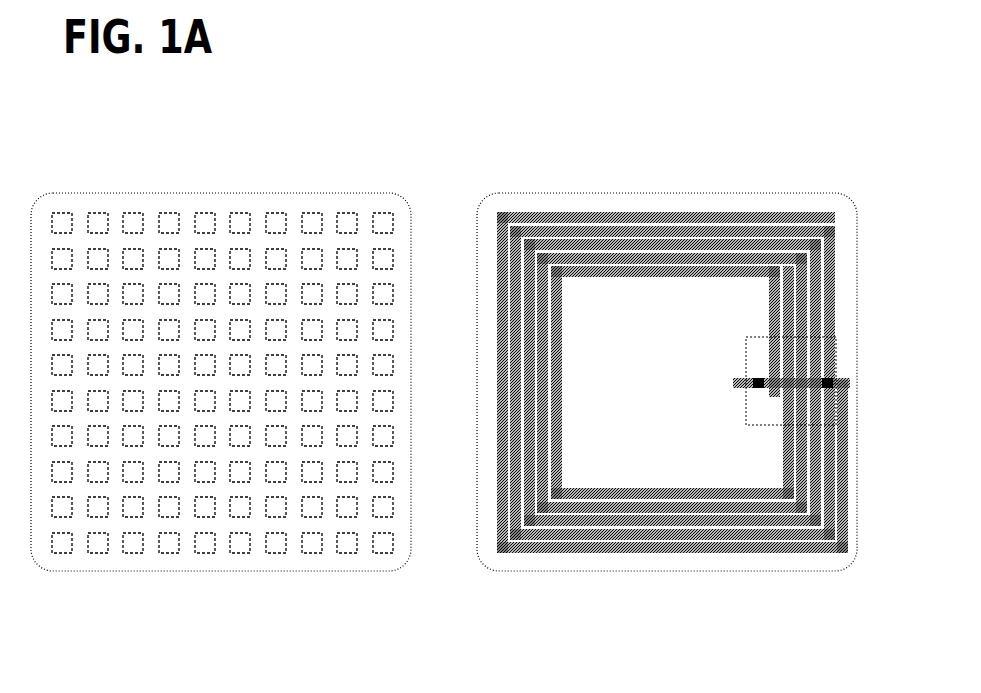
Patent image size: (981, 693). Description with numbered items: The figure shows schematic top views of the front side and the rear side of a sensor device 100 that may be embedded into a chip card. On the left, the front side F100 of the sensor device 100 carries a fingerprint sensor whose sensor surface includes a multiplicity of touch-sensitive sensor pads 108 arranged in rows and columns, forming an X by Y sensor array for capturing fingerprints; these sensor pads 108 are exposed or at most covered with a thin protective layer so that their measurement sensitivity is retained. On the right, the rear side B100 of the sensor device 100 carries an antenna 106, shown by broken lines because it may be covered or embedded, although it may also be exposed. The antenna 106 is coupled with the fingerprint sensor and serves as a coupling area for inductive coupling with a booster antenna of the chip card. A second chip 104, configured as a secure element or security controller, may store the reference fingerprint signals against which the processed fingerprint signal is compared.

The sensor device 100 is at (667, 341).
The second chip 104 is at (757, 337).
The antenna 106 is at (552, 212).
The sensor pads 108 is at (133, 213).
The front side F100 is at (262, 579).
The rear side B100 is at (674, 578).